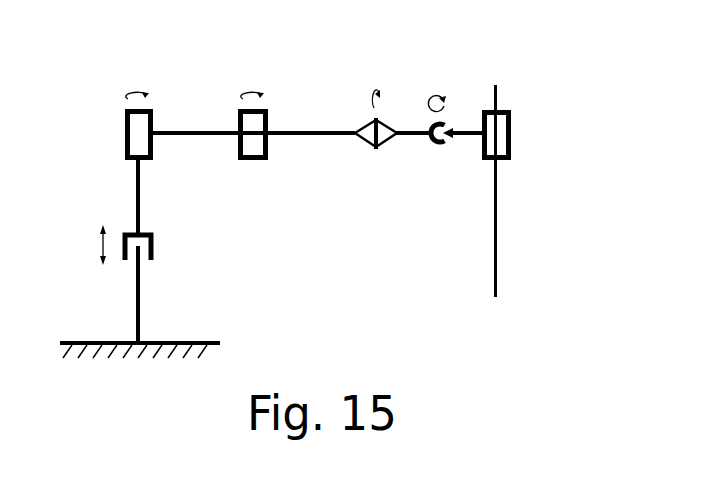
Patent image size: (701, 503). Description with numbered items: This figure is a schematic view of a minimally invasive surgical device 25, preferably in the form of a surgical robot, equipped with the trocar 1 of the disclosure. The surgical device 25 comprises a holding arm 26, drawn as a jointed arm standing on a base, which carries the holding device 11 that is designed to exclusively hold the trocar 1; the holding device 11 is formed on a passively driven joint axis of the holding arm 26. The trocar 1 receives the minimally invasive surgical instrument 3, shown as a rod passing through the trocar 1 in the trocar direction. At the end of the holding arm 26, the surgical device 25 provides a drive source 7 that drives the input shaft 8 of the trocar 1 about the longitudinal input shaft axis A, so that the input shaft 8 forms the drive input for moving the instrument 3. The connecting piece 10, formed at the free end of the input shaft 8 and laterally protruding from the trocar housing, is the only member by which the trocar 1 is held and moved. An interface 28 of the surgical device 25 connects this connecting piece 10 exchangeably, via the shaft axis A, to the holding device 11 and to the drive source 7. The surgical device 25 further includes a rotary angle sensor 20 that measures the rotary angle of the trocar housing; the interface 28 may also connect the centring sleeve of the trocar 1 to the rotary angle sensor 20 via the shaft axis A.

The trocar 1 is at (518, 108).
The surgical instrument 3 is at (510, 275).
The drive source 7 is at (410, 92).
The holding device 11 is at (410, 92).
The rotary angle sensor 20 is at (434, 85).
The input shaft 8 is at (537, 198).
The connecting piece 10 is at (468, 137).
The surgical device 25 is at (100, 92).
The holding arm 26 is at (313, 210).
The interface 28 is at (463, 118).
The longitudinal input shaft axis A is at (468, 140).